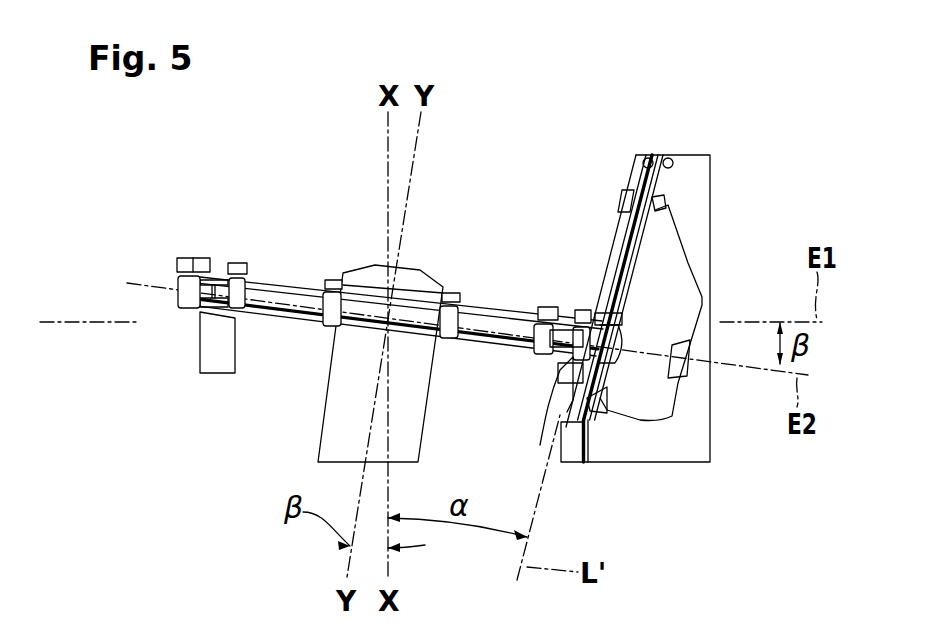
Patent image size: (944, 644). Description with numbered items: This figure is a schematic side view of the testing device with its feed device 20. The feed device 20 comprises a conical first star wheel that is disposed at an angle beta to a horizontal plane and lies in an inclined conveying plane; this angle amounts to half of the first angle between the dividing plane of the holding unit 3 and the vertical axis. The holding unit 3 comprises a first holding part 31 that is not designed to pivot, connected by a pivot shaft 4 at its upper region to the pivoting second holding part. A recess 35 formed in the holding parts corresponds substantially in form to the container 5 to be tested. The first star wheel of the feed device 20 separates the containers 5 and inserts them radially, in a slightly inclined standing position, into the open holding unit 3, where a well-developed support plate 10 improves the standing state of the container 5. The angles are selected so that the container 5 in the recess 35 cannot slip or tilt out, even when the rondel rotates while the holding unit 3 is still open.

The holding unit 3 is at (604, 152).
The pivot shaft 4 is at (668, 158).
The container 5 is at (188, 260).
The support plate 10 is at (547, 428).
The feed device 20 is at (484, 290).
The first holding part 31 is at (668, 243).
The recess 35 is at (612, 257).